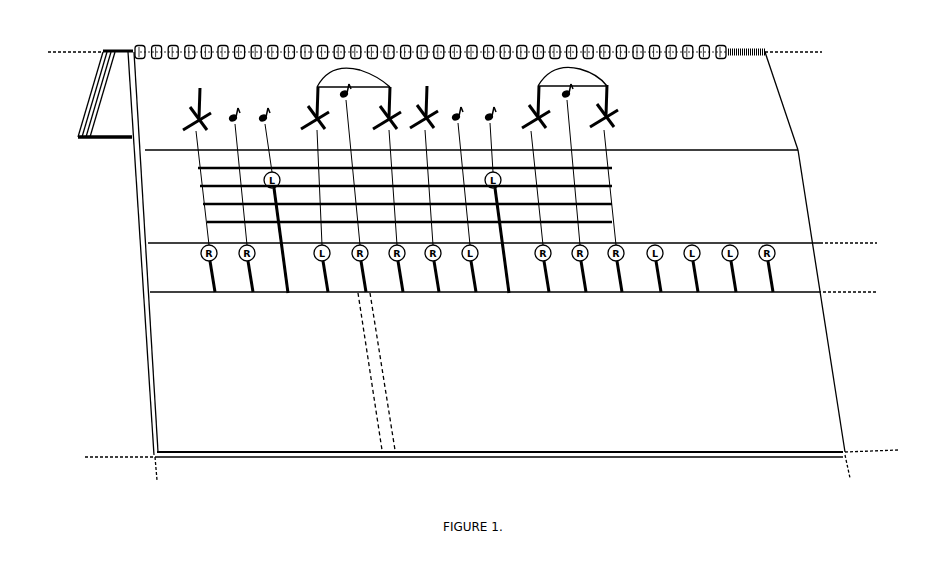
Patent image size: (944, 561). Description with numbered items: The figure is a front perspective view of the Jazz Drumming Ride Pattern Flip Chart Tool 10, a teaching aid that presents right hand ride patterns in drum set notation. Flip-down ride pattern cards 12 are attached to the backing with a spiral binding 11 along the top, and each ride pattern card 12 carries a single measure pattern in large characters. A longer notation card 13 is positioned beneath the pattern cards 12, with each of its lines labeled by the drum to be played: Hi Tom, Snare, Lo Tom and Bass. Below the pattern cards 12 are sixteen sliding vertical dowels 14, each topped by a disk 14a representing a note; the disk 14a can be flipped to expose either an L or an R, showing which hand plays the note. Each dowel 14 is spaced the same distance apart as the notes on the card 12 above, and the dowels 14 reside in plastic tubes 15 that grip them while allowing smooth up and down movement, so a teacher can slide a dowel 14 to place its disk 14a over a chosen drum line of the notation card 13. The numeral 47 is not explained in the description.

The Jazz Drumming Ride Pattern Flip Chart Tool 10 is at (458, 36).
The spiral binding 11 is at (685, 46).
The ride pattern card 12 is at (89, 100).
The notation card 13 is at (613, 198).
The sliding vertical dowel 14 is at (212, 270).
The disk 14a is at (201, 255).
The plastic tube 15 is at (370, 374).
The base panel 47 is at (830, 345).